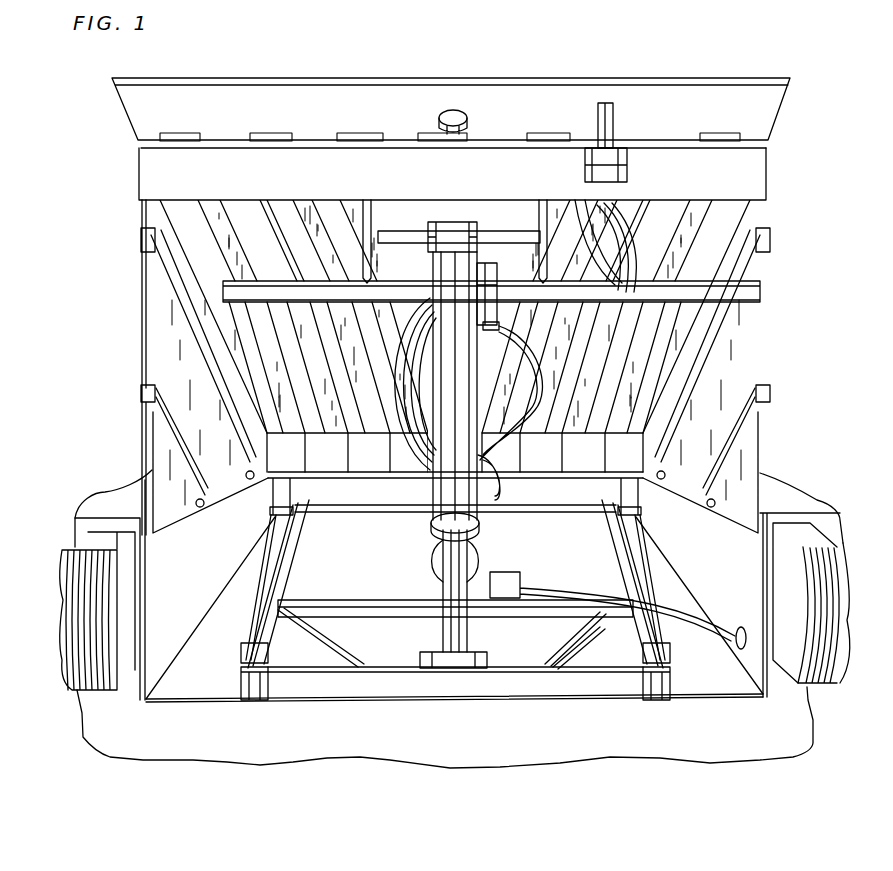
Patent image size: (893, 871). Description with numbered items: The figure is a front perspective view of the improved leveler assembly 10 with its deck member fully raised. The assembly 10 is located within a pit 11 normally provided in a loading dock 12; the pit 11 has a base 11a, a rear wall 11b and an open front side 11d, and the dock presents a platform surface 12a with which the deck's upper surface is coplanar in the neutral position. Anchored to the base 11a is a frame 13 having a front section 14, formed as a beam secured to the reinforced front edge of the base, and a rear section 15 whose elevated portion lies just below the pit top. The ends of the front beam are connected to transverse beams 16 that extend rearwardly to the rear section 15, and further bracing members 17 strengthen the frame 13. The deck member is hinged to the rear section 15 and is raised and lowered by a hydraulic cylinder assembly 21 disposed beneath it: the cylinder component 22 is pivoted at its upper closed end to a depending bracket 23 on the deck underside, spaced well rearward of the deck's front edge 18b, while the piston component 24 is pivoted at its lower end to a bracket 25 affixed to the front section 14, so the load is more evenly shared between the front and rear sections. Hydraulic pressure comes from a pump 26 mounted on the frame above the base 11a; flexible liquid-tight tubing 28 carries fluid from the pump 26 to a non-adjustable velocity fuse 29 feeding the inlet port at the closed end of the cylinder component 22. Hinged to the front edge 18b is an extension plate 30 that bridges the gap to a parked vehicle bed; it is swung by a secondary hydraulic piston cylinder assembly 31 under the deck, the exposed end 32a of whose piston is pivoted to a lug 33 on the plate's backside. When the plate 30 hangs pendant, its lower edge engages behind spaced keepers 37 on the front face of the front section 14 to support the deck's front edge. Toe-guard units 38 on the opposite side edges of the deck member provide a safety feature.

The leveler assembly 10 is at (93, 256).
The pit 11 is at (155, 660).
The base 11a is at (205, 690).
The rear wall 11b is at (370, 490).
The open front side 11d is at (150, 625).
The loading dock 12 is at (70, 503).
The platform surface 12a is at (117, 507).
The frame 13 is at (500, 690).
The front section 14 is at (305, 692).
The rear section 15 is at (305, 490).
The transverse beams 16 is at (293, 572).
The bracing members 17 is at (400, 617).
The front edge 18b is at (138, 160).
The hydraulic cylinder assembly 21 is at (510, 355).
The cylinder component 22 is at (463, 495).
The depending bracket 23 is at (473, 222).
The piston component 24 is at (453, 622).
The bracket 25 is at (457, 652).
The pump 26 is at (430, 566).
The flexible liquid-tight tubing 28 is at (543, 377).
The non-adjustable velocity fuse 29 is at (600, 283).
The extension plate 30 is at (330, 78).
The secondary hydraulic piston cylinder assembly 31 is at (603, 213).
The exposed end 32a is at (620, 157).
The lug 33 is at (606, 117).
The keepers 37 is at (255, 690).
The toe-guard units 38 is at (160, 335).